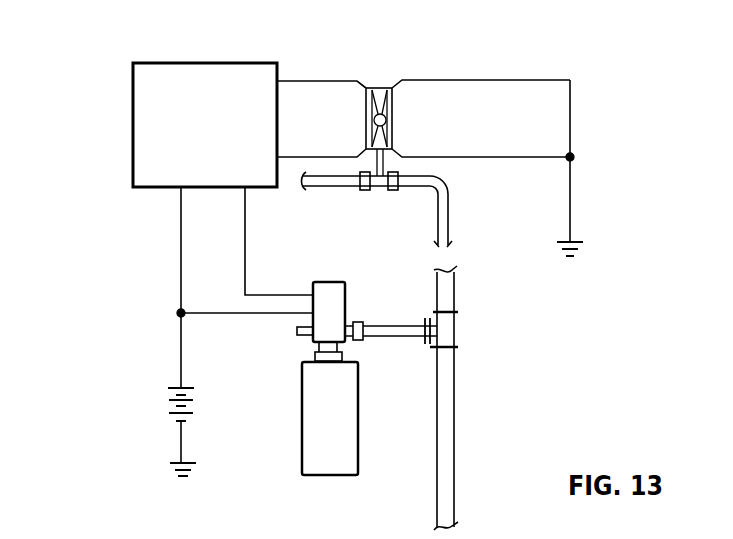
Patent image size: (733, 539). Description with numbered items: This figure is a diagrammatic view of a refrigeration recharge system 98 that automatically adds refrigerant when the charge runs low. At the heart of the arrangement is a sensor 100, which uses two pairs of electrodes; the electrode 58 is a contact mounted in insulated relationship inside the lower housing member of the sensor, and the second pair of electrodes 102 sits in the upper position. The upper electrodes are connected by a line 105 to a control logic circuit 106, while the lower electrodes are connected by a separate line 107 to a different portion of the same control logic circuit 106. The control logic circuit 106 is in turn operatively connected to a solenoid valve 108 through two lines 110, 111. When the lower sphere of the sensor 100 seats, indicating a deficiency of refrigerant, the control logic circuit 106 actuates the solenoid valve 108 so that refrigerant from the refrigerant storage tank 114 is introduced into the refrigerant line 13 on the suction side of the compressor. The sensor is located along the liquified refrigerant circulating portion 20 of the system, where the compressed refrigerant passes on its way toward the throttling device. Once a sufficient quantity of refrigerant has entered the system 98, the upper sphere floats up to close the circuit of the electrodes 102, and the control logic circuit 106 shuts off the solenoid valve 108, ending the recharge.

The refrigerant line 13 is at (447, 290).
The liquified refrigerant circulating portion 20 is at (448, 212).
The electrode 58 is at (392, 134).
The refrigeration recharge system 98 is at (517, 343).
The sensor 100 is at (468, 84).
The second pair of electrodes 102 is at (392, 104).
The line 105 is at (317, 80).
The control logic circuit 106 is at (133, 122).
The line 107 is at (316, 156).
The solenoid valve 108 is at (338, 292).
The line 110 is at (245, 240).
The line 111 is at (181, 262).
The refrigerant storage tank 114 is at (326, 468).